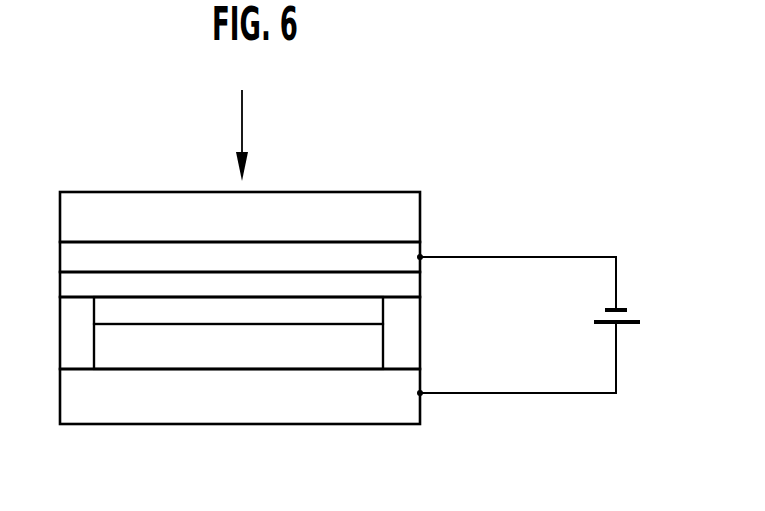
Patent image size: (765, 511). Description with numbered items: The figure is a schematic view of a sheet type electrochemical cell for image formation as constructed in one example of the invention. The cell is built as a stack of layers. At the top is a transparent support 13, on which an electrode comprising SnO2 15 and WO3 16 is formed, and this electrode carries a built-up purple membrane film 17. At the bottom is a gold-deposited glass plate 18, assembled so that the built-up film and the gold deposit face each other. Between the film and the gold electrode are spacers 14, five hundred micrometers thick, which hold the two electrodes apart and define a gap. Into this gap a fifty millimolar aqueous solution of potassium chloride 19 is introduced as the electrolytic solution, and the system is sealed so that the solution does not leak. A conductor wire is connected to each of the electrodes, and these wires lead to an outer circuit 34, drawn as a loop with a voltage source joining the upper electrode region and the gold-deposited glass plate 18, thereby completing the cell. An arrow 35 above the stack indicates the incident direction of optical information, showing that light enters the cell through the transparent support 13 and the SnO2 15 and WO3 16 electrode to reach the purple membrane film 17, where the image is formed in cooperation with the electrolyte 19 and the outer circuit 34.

The transparent support 13 is at (72, 217).
The spacers 14 is at (72, 330).
The SnO2 layer 15 is at (72, 258).
The WO3 layer 16 is at (72, 286).
The built-up purple membrane film 17 is at (371, 315).
The gold-deposited glass plate 18 is at (72, 393).
The aqueous solution of potassium chloride 19 is at (375, 352).
The outer circuit 34 is at (627, 317).
The arrow 35 is at (246, 120).